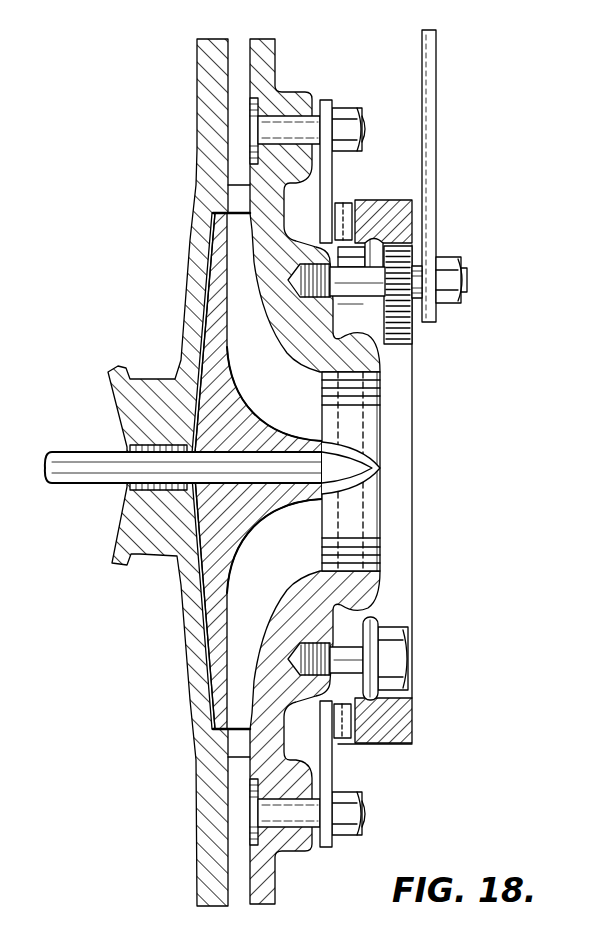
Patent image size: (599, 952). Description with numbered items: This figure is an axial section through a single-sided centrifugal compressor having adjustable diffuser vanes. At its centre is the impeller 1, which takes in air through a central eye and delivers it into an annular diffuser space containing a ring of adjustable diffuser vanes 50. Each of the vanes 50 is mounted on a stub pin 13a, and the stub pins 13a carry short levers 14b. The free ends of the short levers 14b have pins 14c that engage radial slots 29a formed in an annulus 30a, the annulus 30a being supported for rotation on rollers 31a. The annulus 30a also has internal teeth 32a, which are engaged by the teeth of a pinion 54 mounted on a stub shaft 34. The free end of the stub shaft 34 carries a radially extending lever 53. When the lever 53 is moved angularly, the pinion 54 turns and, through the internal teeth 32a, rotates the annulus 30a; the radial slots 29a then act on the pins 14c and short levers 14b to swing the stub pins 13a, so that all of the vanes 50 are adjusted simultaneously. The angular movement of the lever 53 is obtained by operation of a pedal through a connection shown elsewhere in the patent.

The impeller 1 is at (213, 357).
The stub pins 13a is at (300, 122).
The short levers 14b is at (335, 157).
The pins 14c is at (345, 212).
The radial slots 29a is at (353, 219).
The annulus 30a is at (403, 712).
The rollers 31a is at (378, 620).
The internal teeth 32a is at (395, 327).
The stub shaft 34 is at (348, 290).
The adjustable diffuser vanes 50 is at (238, 70).
The lever 53 is at (437, 62).
The pinion 54 is at (412, 318).